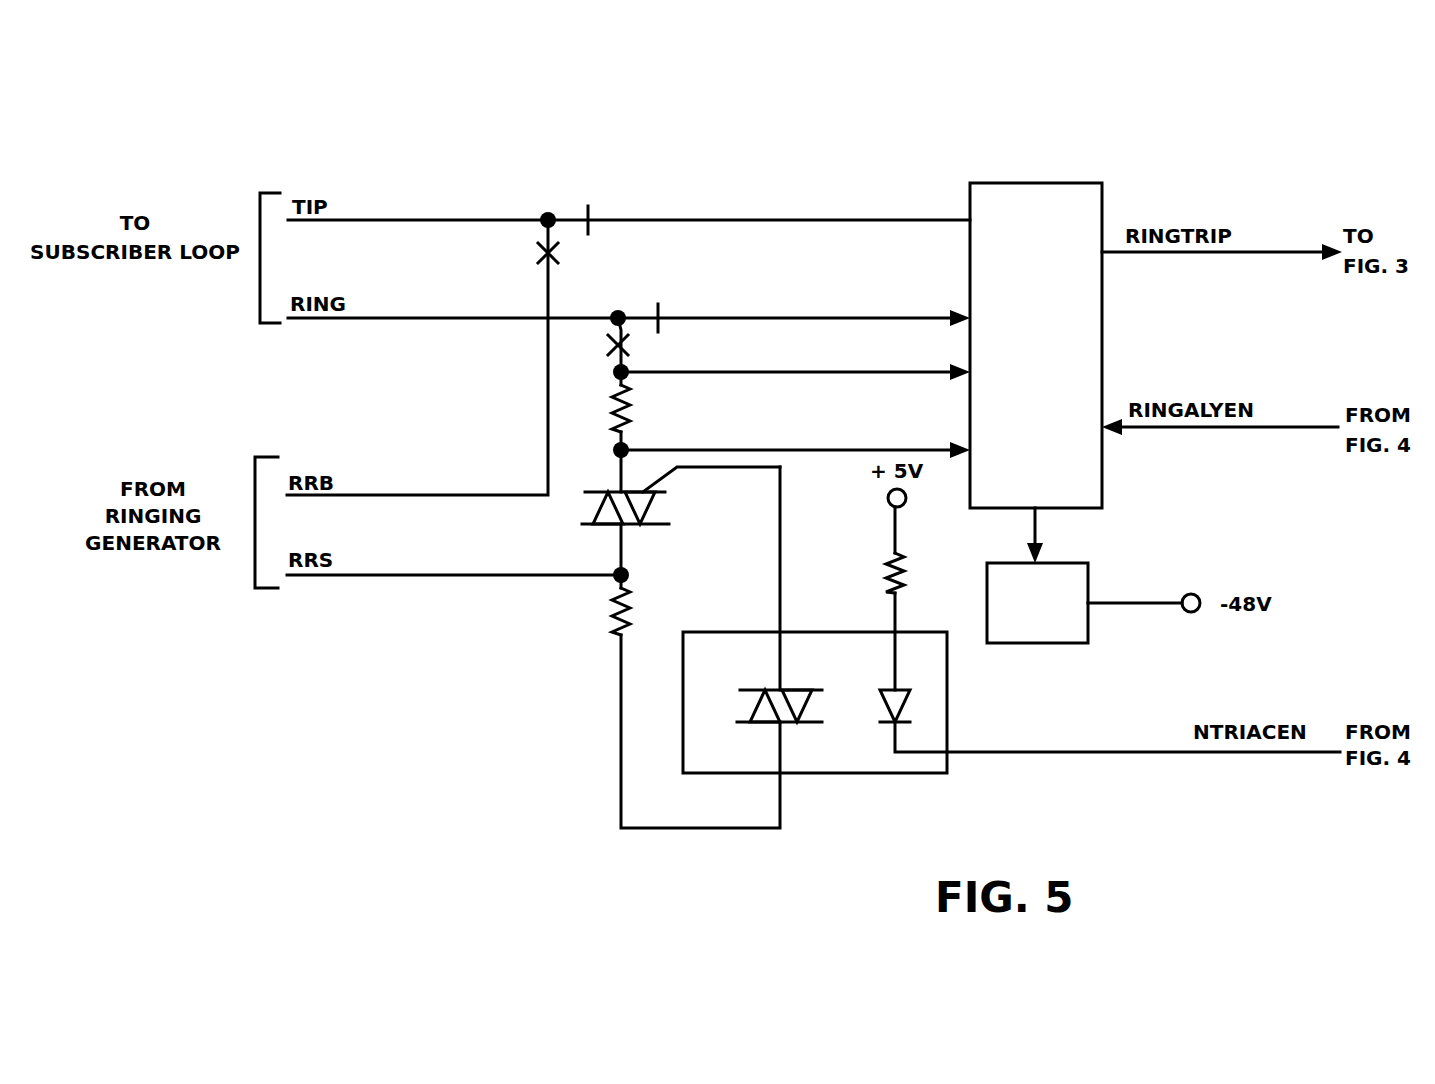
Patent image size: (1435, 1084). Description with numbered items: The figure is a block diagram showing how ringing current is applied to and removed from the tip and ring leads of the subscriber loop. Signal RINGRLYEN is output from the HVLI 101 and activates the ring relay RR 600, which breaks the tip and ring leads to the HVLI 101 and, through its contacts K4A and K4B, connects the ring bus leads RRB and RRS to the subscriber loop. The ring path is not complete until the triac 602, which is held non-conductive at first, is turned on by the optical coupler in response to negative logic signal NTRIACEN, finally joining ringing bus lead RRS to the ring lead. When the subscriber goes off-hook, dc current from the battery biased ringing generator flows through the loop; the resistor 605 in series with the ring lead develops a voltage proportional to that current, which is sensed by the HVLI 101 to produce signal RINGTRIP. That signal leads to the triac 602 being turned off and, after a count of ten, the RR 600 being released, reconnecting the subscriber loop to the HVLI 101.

The HVLI 101 is at (1006, 175).
The ring relay (RR) 600 is at (1068, 557).
The triac 602 is at (578, 532).
The resistor 605 is at (641, 407).
The RR contact K4A is at (618, 212).
The RR contact K4B is at (645, 322).